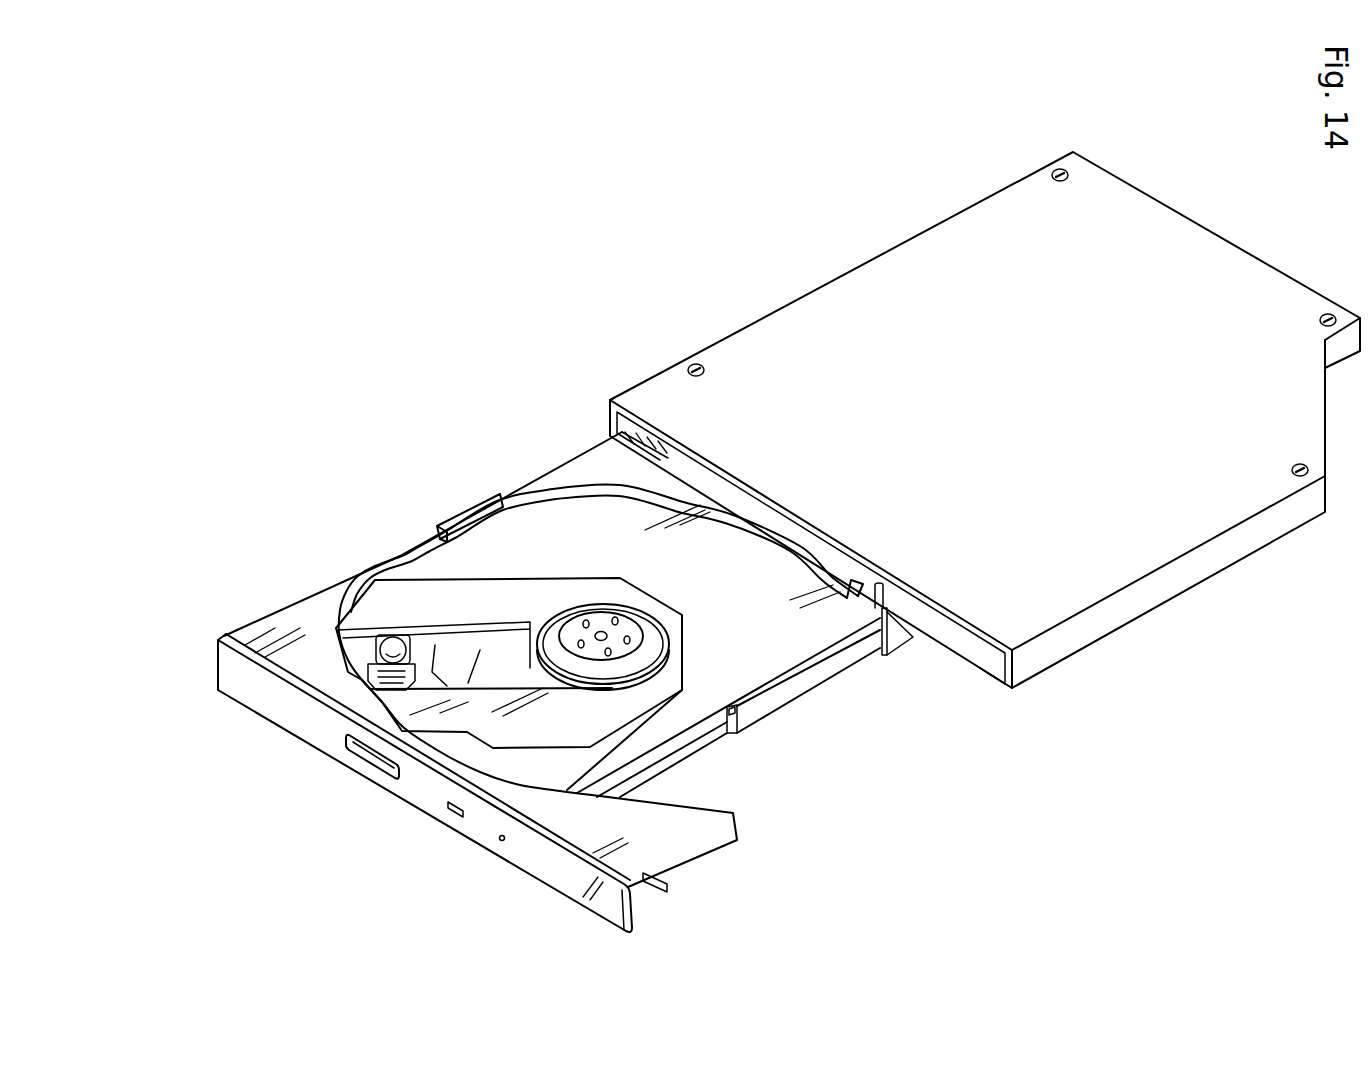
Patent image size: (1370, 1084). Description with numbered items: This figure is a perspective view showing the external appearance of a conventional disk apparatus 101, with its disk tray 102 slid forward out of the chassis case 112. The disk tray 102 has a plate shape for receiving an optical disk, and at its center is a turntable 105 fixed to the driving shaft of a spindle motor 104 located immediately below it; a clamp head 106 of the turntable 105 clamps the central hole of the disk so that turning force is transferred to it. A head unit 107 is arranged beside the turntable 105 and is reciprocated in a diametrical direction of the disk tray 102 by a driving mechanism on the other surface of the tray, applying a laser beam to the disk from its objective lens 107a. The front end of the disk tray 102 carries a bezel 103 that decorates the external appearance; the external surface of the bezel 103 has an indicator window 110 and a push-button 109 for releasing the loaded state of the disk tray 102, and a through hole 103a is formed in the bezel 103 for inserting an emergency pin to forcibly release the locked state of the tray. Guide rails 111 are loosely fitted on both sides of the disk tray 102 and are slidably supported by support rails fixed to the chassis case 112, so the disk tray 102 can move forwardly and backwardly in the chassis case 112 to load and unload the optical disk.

The disk apparatus 101 is at (584, 394).
The disk tray 102 is at (420, 568).
The bezel 103 is at (308, 718).
The through hole 103a is at (501, 841).
The spindle motor 104 is at (510, 653).
The turntable 105 is at (642, 621).
The clamp head 106 is at (628, 617).
The head unit 107 is at (394, 603).
The objective lens 107a is at (391, 636).
The push-button 109 is at (376, 760).
The indicator window 110 is at (450, 819).
The guide rails 111 is at (470, 512).
The chassis case 112 is at (893, 273).